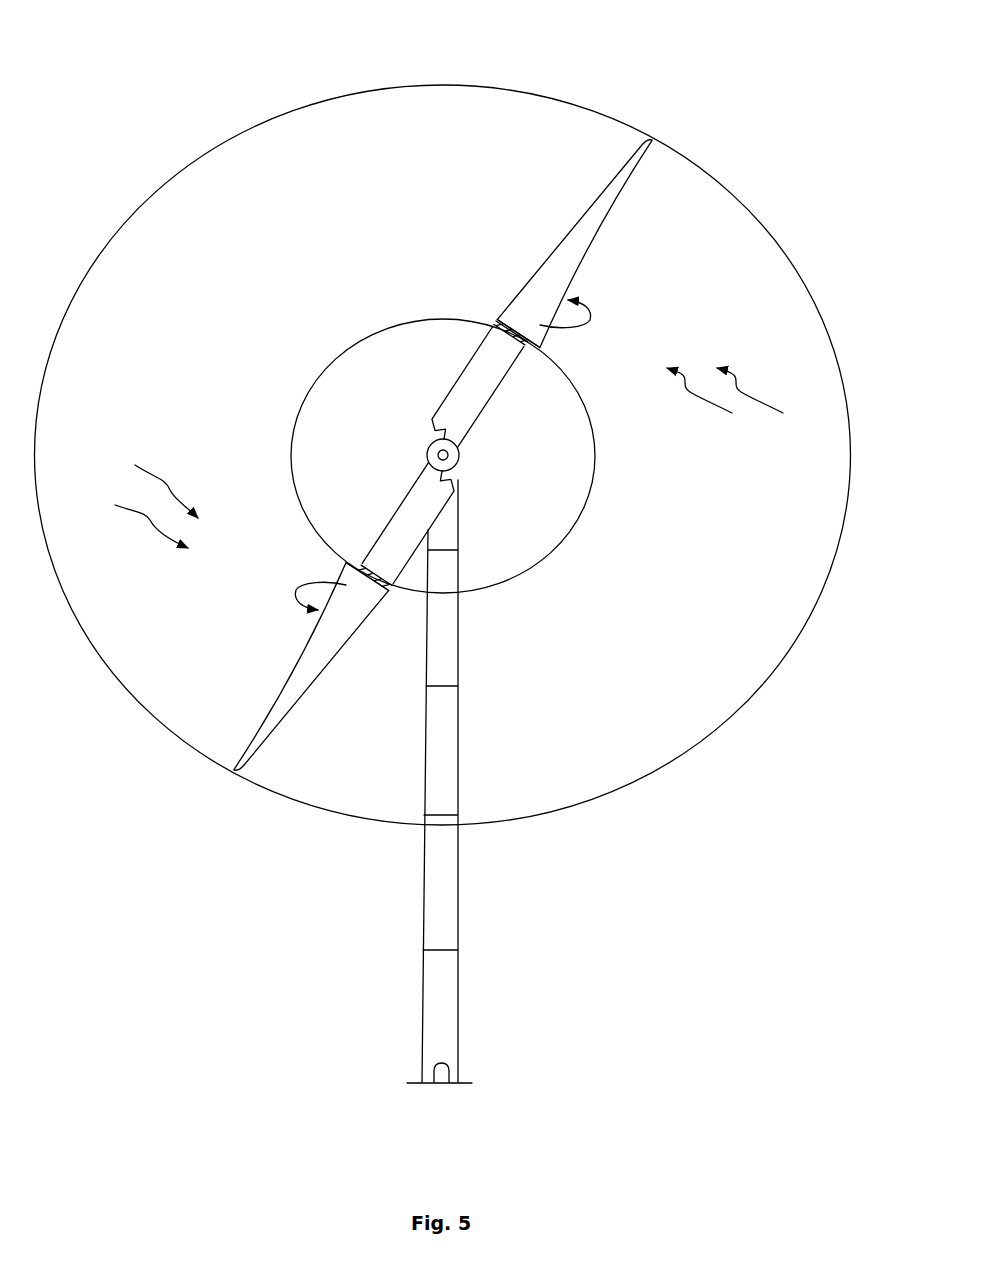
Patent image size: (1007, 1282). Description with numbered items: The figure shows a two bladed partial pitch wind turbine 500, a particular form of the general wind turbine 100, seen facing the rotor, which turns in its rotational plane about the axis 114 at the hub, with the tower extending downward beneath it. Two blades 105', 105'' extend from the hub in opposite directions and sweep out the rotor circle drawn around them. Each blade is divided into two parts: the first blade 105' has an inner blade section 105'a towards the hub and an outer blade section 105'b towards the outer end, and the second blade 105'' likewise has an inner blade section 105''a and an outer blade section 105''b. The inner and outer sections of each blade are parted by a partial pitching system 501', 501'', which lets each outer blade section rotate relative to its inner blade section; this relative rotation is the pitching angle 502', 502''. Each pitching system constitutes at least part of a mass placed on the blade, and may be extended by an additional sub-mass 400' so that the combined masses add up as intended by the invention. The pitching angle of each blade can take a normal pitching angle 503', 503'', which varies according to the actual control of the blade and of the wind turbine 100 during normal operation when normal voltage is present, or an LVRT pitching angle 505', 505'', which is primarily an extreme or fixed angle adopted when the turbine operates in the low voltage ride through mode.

The wind turbine 100 is at (645, 97).
The two bladed partial pitch wind turbine 500 is at (733, 145).
The axis 114 is at (448, 455).
The blade 105' is at (547, 287).
The inner blade section 105'a is at (564, 388).
The outer blade section 105'b is at (623, 235).
The partial pitching system 501' is at (443, 300).
The sub-mass 400' is at (513, 247).
The pitching angle 502' is at (638, 326).
The normal pitching angle 503' is at (713, 399).
The LVRT pitching angle 505' is at (777, 399).
The blade 105'' is at (345, 574).
The inner blade section 105''a is at (329, 473).
The outer blade section 105''b is at (278, 674).
The partial pitching system 501'' is at (368, 652).
The pitching angle 502'' is at (276, 546).
The normal pitching angle 503'' is at (126, 513).
The LVRT pitching angle 505'' is at (148, 476).